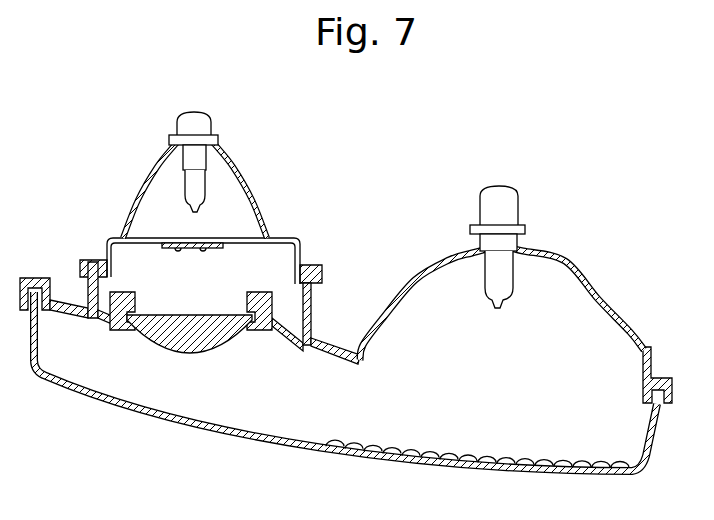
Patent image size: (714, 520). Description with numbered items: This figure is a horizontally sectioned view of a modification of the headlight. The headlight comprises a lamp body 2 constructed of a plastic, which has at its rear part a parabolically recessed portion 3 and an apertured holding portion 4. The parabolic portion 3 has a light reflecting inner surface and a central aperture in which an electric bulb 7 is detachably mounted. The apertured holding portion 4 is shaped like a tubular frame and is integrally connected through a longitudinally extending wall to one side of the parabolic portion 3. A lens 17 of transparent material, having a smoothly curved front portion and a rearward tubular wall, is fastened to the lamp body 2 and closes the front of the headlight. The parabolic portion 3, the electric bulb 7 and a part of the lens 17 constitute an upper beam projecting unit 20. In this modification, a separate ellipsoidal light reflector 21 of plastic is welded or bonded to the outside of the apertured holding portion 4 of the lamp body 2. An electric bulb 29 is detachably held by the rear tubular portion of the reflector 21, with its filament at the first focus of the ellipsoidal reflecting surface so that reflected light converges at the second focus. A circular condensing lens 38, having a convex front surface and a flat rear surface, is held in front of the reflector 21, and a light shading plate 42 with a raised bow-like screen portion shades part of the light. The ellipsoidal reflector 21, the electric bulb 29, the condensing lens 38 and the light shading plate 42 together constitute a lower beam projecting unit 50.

The lamp body 2 is at (361, 381).
The parabolically recessed portion 3 is at (601, 303).
The apertured holding portion 4 is at (312, 288).
The electric bulb 7 is at (486, 291).
The lens 17 is at (300, 443).
The upper beam projecting unit 20 is at (482, 219).
The ellipsoidal light reflector 21 is at (252, 191).
The electric bulb 29 is at (184, 191).
The circular condensing lens 38 is at (192, 353).
The light shading plate 42 is at (212, 251).
The lower beam projecting unit 50 is at (181, 131).